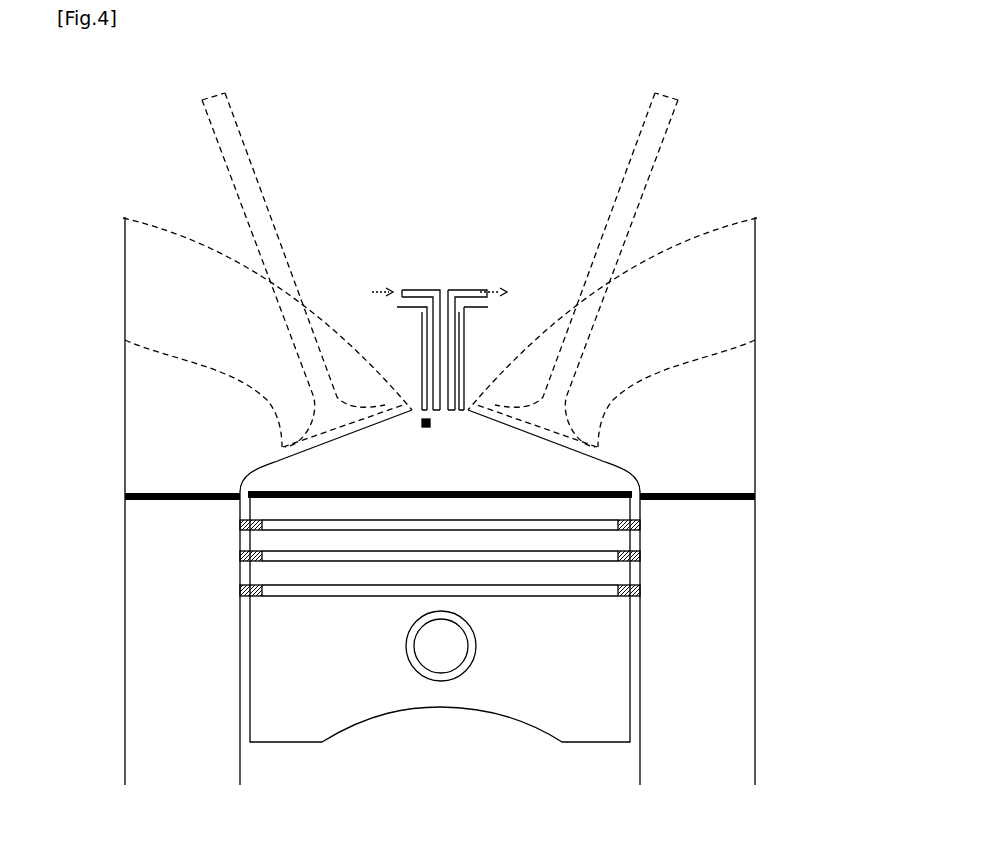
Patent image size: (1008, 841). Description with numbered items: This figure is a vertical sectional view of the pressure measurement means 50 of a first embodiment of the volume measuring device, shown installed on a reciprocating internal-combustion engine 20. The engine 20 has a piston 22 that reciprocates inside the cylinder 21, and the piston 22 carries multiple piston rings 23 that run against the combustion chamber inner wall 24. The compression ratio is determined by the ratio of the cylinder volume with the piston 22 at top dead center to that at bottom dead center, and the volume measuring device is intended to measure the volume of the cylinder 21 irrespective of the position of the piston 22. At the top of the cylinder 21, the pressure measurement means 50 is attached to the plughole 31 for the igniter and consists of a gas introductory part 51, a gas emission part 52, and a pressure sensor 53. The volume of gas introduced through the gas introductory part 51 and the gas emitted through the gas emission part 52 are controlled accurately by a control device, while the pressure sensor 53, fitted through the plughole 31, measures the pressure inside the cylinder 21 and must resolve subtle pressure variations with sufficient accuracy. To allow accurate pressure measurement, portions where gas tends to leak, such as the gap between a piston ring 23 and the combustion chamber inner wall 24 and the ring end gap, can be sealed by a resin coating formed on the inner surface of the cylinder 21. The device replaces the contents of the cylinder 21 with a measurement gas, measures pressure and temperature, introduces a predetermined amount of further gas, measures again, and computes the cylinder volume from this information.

The internal-combustion engine 20 is at (795, 143).
The cylinder 21 is at (577, 473).
The piston 22 is at (585, 722).
The piston rings 23 is at (240, 527).
The combustion chamber inner wall 24 is at (640, 644).
The plughole 31 is at (488, 307).
The pressure measurement means 50 is at (449, 322).
The gas introductory part 51 is at (418, 289).
The gas emission part 52 is at (471, 290).
The pressure sensor 53 is at (432, 426).